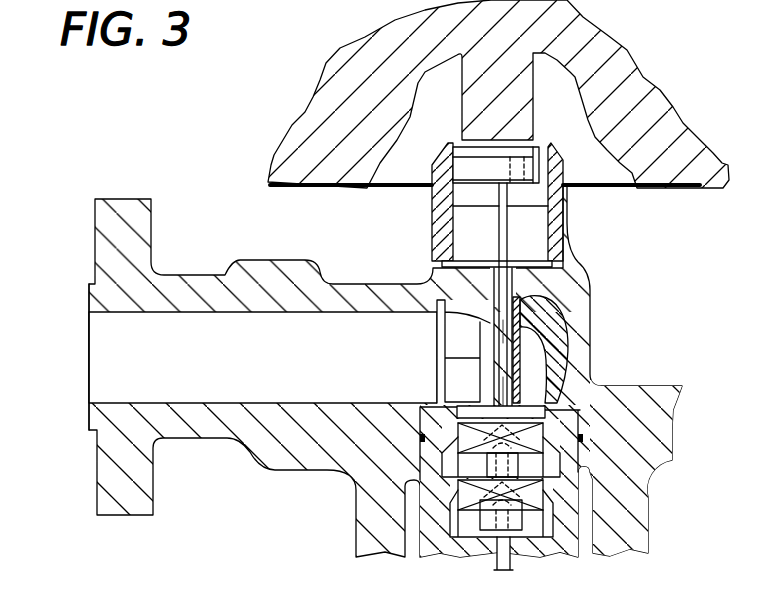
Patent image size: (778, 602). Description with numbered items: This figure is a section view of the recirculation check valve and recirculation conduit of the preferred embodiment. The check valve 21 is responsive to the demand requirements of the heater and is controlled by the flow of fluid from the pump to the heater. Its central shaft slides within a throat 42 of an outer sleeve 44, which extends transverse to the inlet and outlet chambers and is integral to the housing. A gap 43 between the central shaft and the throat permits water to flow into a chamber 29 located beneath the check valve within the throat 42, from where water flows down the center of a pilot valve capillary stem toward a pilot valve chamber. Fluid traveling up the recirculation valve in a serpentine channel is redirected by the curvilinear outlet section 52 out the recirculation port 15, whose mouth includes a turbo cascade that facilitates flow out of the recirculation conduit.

The check valve 21 is at (647, 90).
The recirculation port 15 is at (123, 357).
The throat 42 is at (453, 218).
The outer sleeve 44 is at (448, 213).
The gap 43 is at (550, 195).
The chamber 29 is at (530, 238).
The curvilinear outlet section 52 is at (530, 336).